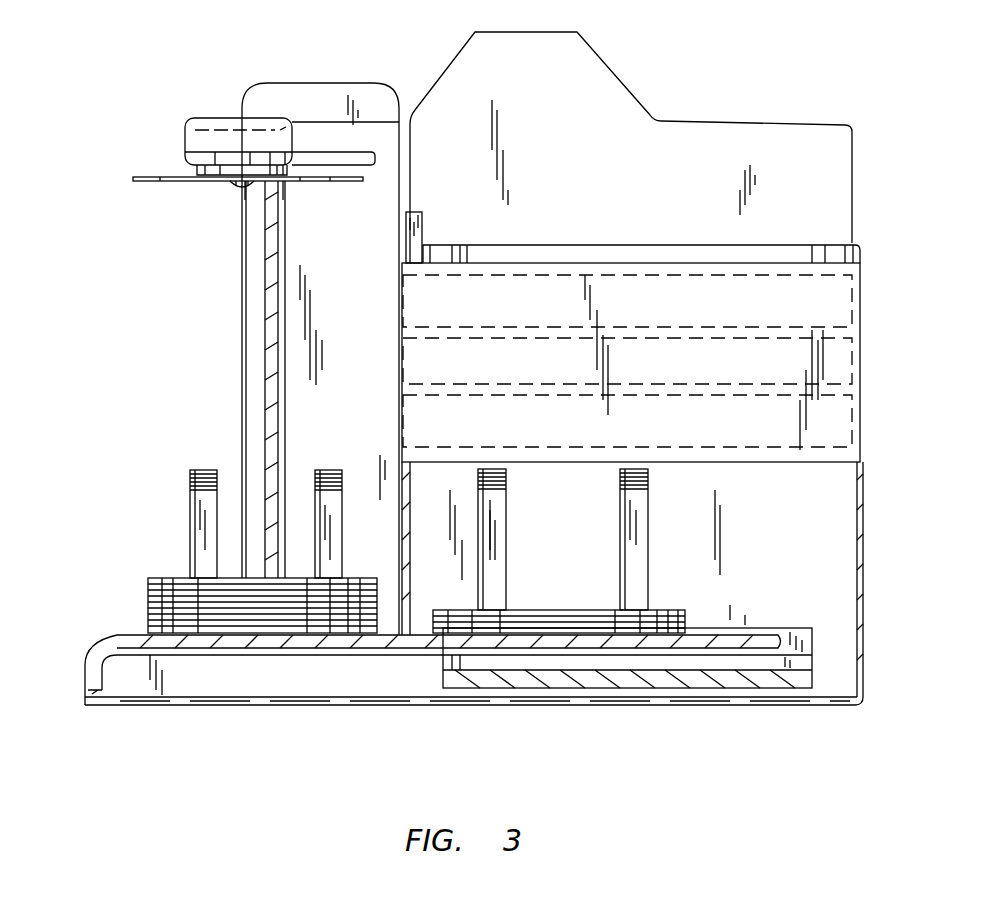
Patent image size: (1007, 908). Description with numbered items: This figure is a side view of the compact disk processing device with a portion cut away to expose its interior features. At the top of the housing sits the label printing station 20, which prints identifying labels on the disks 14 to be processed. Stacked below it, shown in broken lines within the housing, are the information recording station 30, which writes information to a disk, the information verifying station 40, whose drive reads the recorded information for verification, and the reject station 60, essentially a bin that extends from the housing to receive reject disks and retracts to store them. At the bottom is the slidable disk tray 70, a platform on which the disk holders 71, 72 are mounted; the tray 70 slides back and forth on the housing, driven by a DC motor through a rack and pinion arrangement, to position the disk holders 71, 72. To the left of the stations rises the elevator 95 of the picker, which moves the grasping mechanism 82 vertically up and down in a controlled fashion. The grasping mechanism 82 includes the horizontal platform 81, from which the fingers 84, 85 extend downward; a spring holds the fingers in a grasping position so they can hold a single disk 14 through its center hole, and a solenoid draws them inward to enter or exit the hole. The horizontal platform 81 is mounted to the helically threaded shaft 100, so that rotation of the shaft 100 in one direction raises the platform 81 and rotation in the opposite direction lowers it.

The disk 14 is at (152, 178).
The label printing station 20 is at (670, 123).
The information recording station 30 is at (855, 290).
The information verifying station 40 is at (855, 355).
The reject station 60 is at (855, 418).
The slidable disk tray 70 is at (88, 650).
The disk holder 71 is at (190, 515).
The disk holder 72 is at (645, 535).
The horizontal platform 81 is at (215, 118).
The grasping mechanism 82 is at (185, 165).
The finger 84 is at (235, 186).
The finger 85 is at (248, 190).
The elevator 95 is at (376, 197).
The helically threaded shaft 100 is at (268, 297).